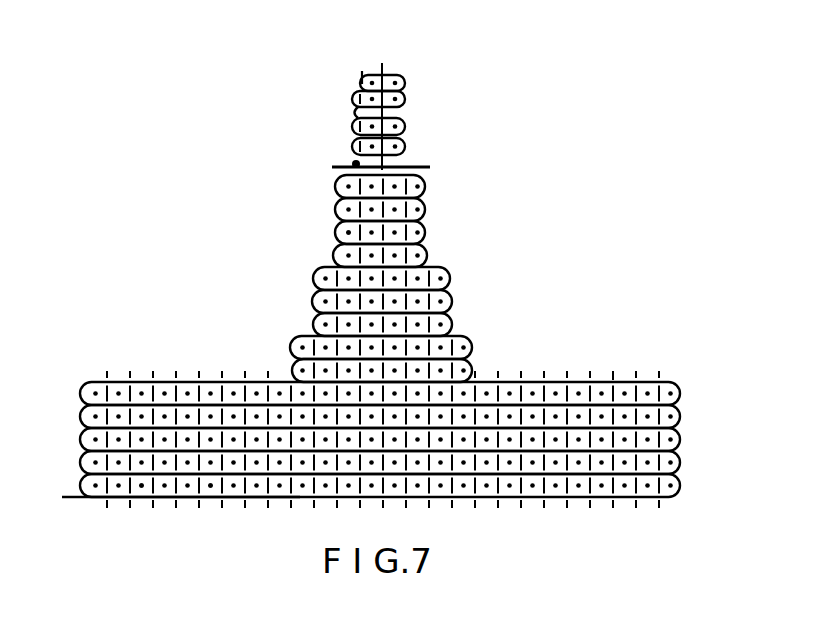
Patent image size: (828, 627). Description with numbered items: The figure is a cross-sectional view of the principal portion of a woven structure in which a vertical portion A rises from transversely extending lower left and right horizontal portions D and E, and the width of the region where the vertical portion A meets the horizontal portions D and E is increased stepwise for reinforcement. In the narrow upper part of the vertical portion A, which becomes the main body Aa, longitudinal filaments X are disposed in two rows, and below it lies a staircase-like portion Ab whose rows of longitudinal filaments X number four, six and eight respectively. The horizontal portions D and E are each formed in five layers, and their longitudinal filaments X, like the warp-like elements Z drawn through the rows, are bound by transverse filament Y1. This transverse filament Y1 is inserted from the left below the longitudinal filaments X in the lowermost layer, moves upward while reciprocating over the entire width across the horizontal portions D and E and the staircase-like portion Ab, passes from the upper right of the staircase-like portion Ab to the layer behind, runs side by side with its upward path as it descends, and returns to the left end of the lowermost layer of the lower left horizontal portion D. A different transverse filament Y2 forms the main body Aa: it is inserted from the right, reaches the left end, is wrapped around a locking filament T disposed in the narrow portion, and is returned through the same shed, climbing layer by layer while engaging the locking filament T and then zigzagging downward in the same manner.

The vertical portion A is at (285, 344).
The main body Aa is at (366, 121).
The staircase-like portion Ab is at (295, 292).
The lower left horizontal portion D is at (139, 341).
The lower right horizontal portion E is at (560, 342).
The longitudinal filament X is at (371, 78).
The warp yarn Z is at (385, 67).
The transverse filament Y1 is at (425, 220).
The transverse filament Y2 is at (404, 128).
The locking filament T is at (362, 76).